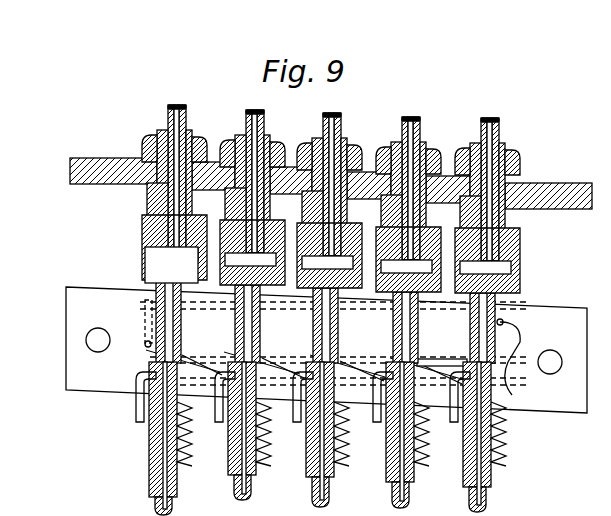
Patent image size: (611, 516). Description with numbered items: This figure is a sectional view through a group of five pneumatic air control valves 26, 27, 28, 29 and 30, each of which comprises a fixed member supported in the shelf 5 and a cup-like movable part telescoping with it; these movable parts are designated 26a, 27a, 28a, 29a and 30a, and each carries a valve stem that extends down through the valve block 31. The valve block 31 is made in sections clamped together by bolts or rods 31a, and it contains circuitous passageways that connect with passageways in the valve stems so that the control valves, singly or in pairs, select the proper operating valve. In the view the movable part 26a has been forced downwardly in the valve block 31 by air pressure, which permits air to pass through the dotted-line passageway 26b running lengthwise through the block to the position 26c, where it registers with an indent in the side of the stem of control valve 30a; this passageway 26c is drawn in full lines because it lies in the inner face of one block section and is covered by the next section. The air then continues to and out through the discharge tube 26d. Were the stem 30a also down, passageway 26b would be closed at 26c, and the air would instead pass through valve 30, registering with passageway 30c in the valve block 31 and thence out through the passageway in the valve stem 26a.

The shelf 5 is at (568, 187).
The air control valve 26 is at (165, 129).
The movable part of control valve 26a is at (142, 262).
The passageway 26b is at (146, 307).
The passageway position 26c is at (509, 330).
The discharge tube 26d is at (190, 432).
The air control valve 27 is at (243, 136).
The movable part of control valve 27a is at (243, 276).
The air control valve 28 is at (321, 141).
The movable part of control valve 28a is at (318, 278).
The air control valve 29 is at (402, 148).
The movable part of control valve 29a is at (397, 281).
The air control valve 30 is at (478, 146).
The movable part of control valve 30a is at (476, 285).
The passageway 30c is at (445, 360).
The valve block 31 is at (78, 310).
The bolts or rods 31a is at (92, 346).